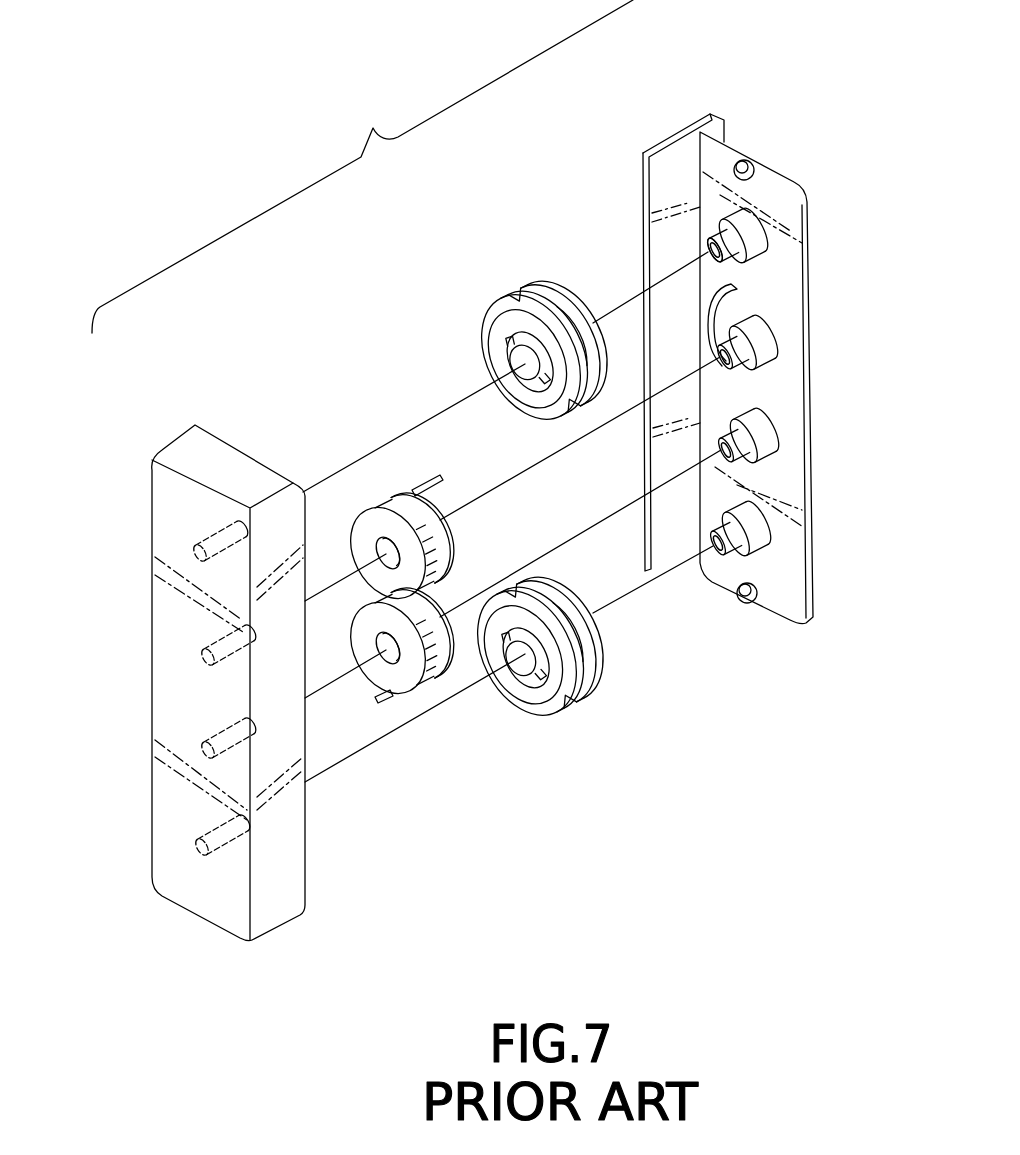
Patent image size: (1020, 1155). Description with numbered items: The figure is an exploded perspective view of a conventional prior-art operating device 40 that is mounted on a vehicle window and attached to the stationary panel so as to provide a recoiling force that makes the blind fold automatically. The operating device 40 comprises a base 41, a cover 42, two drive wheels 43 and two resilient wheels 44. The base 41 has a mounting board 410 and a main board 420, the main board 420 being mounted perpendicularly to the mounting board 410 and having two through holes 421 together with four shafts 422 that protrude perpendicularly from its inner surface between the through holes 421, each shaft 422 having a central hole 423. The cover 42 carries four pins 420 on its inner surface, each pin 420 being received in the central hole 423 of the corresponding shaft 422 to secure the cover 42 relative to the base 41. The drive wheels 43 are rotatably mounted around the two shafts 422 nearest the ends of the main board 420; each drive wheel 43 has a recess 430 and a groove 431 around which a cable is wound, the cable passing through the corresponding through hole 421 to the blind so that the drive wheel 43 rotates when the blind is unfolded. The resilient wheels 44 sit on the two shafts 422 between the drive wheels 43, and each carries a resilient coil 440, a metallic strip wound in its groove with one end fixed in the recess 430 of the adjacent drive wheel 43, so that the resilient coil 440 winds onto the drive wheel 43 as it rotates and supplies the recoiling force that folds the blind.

The operating device 40 is at (432, 240).
The base 41 is at (727, 137).
The mounting board 410 is at (672, 193).
The cover 42 is at (177, 623).
The main board 420 is at (778, 304).
The through hole 421 is at (742, 165).
The shaft 422 is at (736, 252).
The central hole 423 is at (708, 250).
The drive wheel 43 is at (490, 327).
The recess 430 is at (538, 413).
The groove 431 is at (556, 293).
The resilient wheel 44 is at (367, 523).
The resilient coil 440 is at (410, 490).